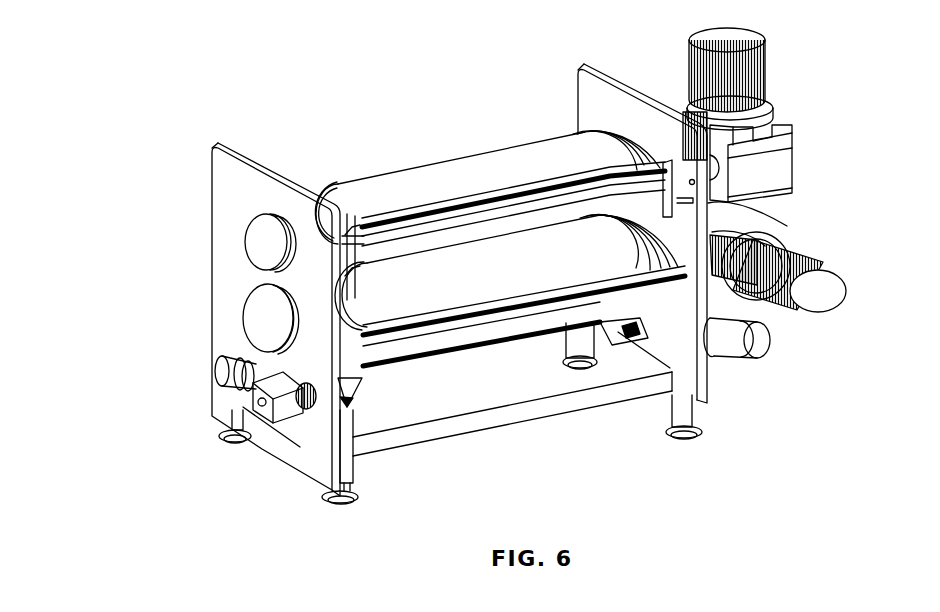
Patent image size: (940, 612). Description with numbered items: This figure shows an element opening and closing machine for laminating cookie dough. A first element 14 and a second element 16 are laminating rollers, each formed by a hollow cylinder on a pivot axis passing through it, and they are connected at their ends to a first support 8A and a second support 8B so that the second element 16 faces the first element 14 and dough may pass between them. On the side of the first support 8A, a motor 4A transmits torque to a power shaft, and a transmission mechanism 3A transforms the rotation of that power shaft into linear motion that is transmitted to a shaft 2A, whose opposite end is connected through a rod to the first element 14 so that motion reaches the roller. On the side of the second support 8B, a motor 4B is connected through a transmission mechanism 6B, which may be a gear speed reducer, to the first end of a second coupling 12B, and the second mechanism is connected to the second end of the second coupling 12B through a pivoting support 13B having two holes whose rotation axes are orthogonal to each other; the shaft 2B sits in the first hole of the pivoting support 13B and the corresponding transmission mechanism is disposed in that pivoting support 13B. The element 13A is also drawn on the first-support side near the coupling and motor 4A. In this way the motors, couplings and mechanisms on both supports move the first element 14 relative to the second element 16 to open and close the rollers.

The second support 8B is at (232, 160).
The first support 8A is at (578, 90).
The second element 16 is at (397, 183).
The first element 14 is at (508, 268).
The pivoting support 13B is at (355, 380).
The first bearing housing 13A is at (710, 335).
The motor 4A is at (750, 318).
The motor 4B is at (212, 388).
The shaft 2A is at (685, 330).
The shaft 2B is at (352, 405).
The transmission mechanism 3A is at (622, 332).
The transmission mechanism 6B is at (225, 428).
The second coupling 12B is at (313, 420).